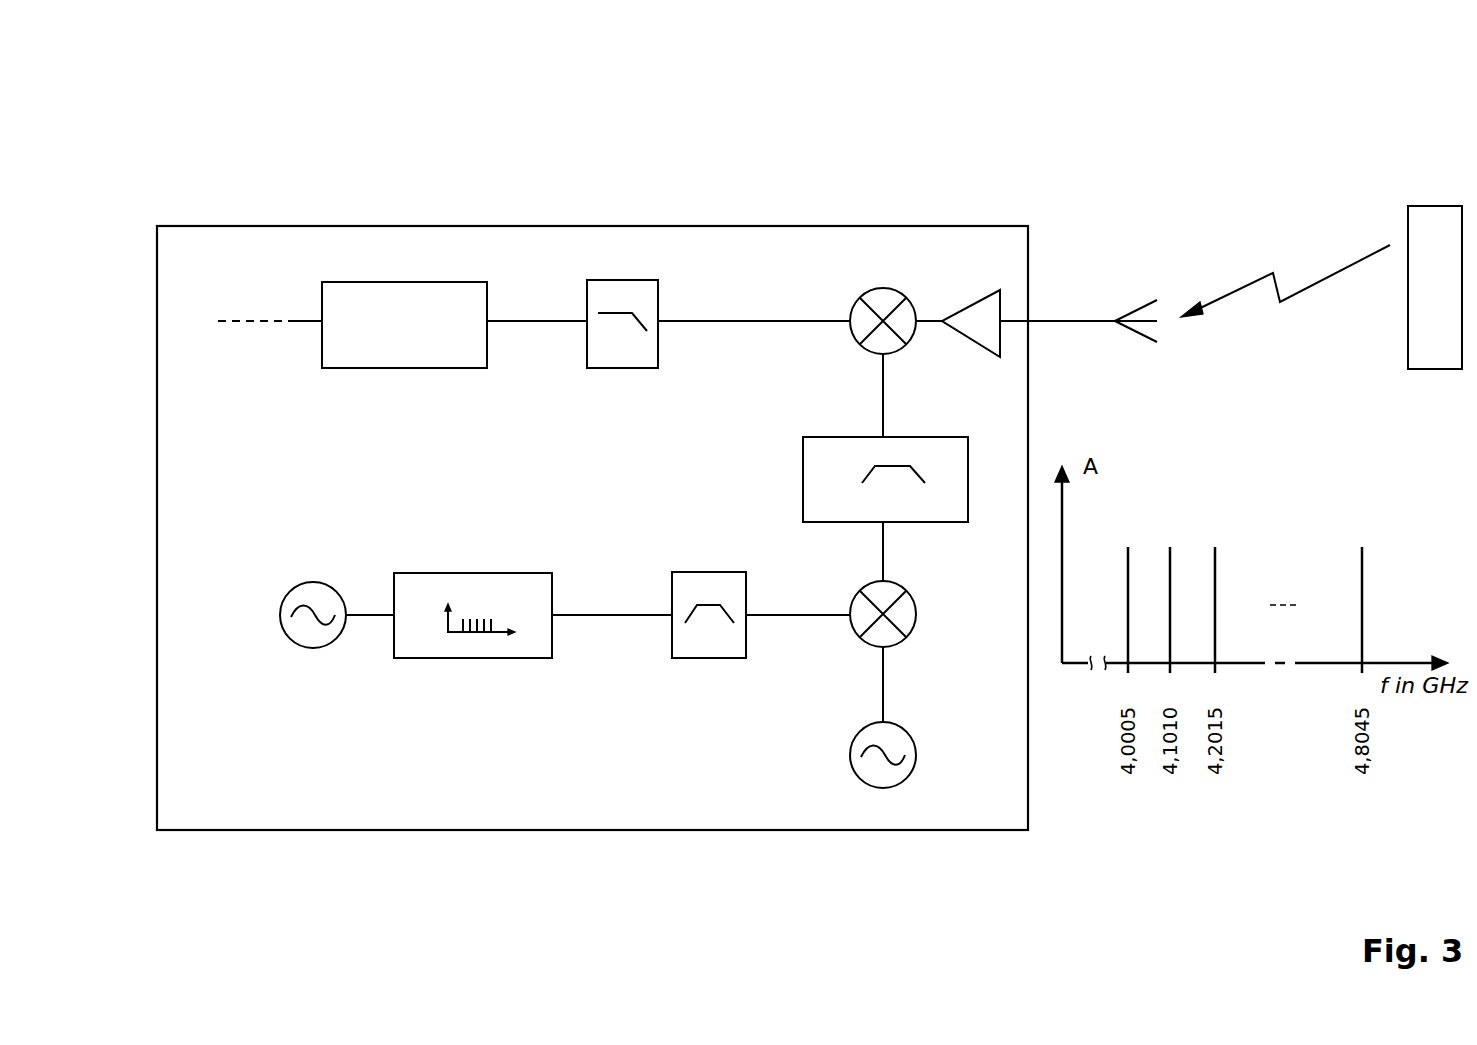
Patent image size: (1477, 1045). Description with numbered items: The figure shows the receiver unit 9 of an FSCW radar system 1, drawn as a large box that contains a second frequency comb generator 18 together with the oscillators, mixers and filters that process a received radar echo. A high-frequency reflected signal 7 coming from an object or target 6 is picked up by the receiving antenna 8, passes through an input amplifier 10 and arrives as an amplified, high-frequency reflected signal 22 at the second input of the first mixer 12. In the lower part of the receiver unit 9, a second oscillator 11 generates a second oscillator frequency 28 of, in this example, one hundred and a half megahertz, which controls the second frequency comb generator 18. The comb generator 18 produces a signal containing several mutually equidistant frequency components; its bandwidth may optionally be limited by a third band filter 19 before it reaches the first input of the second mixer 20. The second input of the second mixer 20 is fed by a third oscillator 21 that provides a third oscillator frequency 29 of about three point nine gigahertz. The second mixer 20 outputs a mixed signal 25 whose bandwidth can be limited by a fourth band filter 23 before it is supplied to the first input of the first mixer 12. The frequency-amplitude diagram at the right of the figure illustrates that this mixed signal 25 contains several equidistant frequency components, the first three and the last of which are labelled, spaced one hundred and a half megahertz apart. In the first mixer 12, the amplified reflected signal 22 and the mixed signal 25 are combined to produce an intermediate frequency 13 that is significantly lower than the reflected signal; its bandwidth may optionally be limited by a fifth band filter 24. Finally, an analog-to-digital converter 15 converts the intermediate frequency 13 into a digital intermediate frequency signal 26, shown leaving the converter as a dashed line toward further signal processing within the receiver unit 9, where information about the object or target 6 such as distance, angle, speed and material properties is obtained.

The FSCW radar system 1 is at (160, 186).
The object or target 6 is at (1433, 235).
The reflected signal 7 is at (1297, 265).
The receiving antenna 8 is at (1142, 297).
The receiver unit 9 is at (241, 265).
The input amplifier 10 is at (980, 320).
The second oscillator 11 is at (308, 632).
The first mixer 12 is at (883, 305).
The intermediate frequency 13 is at (750, 325).
The analog-to-digital converter 15 is at (418, 315).
The second frequency comb generator 18 is at (418, 648).
The third band filter 19 is at (698, 635).
The second mixer 20 is at (900, 615).
The third oscillator 21 is at (880, 772).
The amplified high-frequency reflected signal 22 is at (932, 320).
The fourth band filter 23 is at (830, 467).
The fifth band filter 24 is at (617, 297).
The mixed signal 25 is at (883, 551).
The digital intermediate frequency signal 26 is at (295, 321).
The second oscillator frequency 28 is at (373, 618).
The third oscillator frequency 29 is at (883, 683).